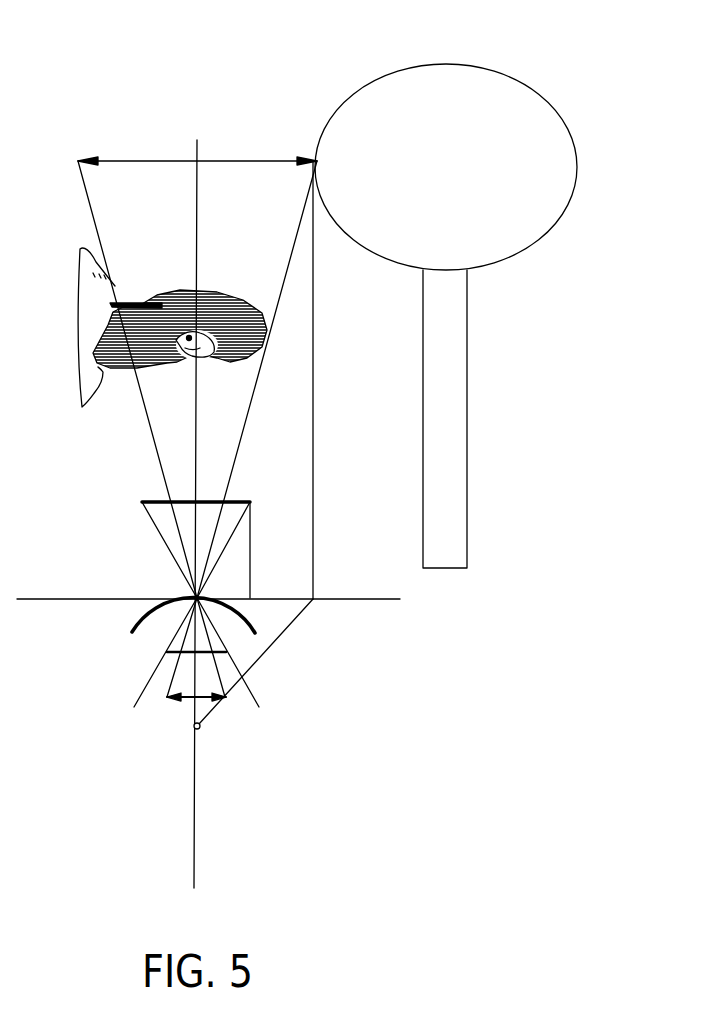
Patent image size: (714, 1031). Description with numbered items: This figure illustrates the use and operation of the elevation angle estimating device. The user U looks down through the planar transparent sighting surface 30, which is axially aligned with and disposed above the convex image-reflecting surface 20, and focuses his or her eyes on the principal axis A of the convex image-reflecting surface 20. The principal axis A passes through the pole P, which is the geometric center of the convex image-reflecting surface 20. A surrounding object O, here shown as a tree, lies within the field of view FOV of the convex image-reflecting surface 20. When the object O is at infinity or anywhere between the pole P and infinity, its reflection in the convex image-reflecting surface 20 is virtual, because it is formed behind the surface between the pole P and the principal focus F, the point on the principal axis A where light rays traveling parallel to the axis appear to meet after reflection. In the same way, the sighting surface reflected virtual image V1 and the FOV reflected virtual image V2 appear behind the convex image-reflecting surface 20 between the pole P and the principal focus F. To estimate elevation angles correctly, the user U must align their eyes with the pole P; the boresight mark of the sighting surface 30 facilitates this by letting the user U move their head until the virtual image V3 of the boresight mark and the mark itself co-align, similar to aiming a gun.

The object O is at (500, 68).
The field of view FOV is at (149, 160).
The user U is at (215, 292).
The principal axis A is at (196, 447).
The planar transparent sighting surface 30 is at (143, 501).
The convex image-reflecting surface 20 is at (150, 599).
The pole P is at (196, 598).
The sighting surface reflected virtual image V1 is at (226, 652).
The FOV reflected virtual image V2 is at (226, 698).
The virtual image of the boresight mark V3 is at (165, 664).
The principal focus F is at (202, 728).